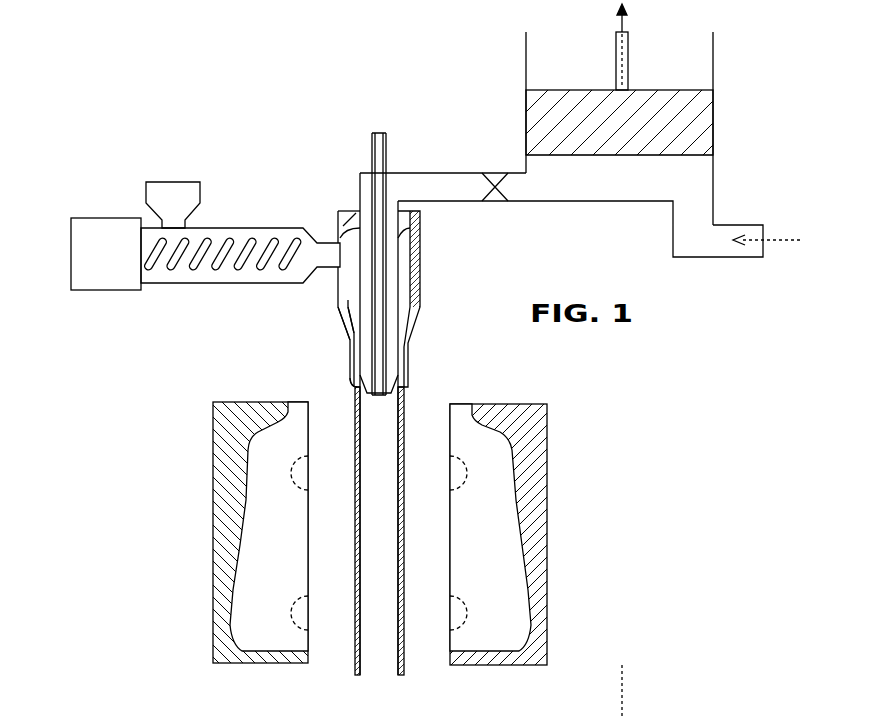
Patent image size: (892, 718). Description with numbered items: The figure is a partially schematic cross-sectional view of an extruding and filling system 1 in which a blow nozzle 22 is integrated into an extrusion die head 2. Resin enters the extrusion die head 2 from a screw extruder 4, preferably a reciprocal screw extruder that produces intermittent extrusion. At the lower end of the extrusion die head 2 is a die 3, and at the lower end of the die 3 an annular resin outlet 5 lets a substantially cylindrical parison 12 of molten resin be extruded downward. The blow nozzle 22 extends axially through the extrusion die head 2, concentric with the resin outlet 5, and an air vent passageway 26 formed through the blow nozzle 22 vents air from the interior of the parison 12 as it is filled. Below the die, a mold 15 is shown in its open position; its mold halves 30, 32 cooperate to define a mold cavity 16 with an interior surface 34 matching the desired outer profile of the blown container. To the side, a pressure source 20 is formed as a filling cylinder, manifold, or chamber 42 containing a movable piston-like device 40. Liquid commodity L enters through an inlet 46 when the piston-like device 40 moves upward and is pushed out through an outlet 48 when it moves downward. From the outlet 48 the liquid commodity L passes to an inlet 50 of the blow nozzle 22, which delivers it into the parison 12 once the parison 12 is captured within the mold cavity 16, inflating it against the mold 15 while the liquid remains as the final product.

The extruding and filling system 1 is at (156, 153).
The extrusion die head 2 is at (348, 206).
The die 3 is at (350, 352).
The screw extruder 4 is at (280, 228).
The annular resin outlet 5 is at (352, 380).
The parison 12 is at (390, 673).
The mold 15 is at (250, 382).
The mold cavity 16 is at (502, 468).
The pressure source 20 is at (713, 70).
The blow nozzle 22 is at (393, 367).
The air vent passageway 26 is at (388, 145).
The mold half 30 is at (213, 480).
The mold half 32 is at (547, 478).
The interior surface 34 is at (235, 555).
The piston-like device 40 is at (695, 122).
The filling cylinder, manifold, or chamber 42 is at (538, 70).
The inlet 46 is at (747, 247).
The outlet 48 is at (518, 171).
The inlet 50 is at (470, 197).
The liquid commodity L is at (695, 183).